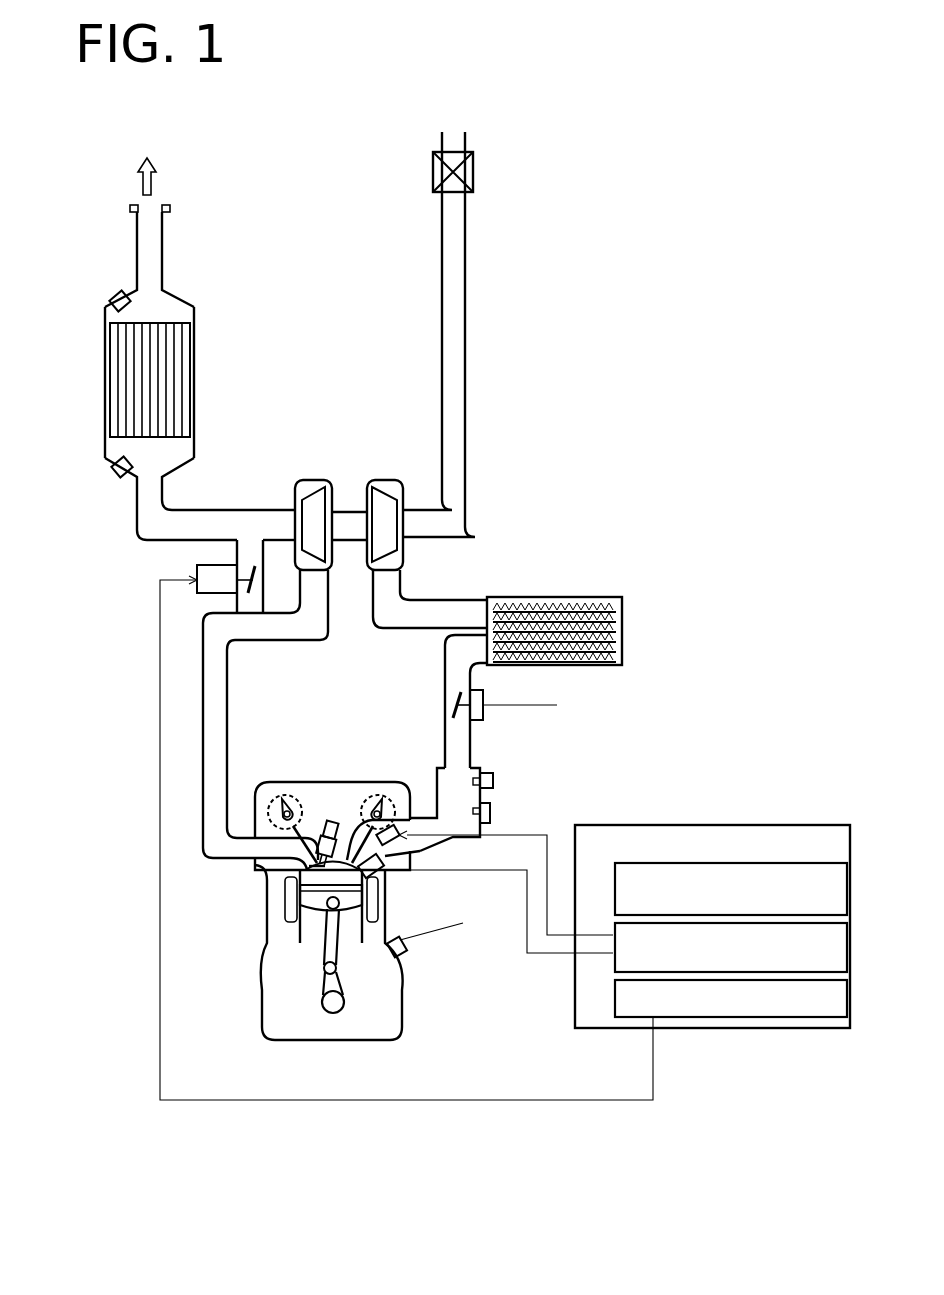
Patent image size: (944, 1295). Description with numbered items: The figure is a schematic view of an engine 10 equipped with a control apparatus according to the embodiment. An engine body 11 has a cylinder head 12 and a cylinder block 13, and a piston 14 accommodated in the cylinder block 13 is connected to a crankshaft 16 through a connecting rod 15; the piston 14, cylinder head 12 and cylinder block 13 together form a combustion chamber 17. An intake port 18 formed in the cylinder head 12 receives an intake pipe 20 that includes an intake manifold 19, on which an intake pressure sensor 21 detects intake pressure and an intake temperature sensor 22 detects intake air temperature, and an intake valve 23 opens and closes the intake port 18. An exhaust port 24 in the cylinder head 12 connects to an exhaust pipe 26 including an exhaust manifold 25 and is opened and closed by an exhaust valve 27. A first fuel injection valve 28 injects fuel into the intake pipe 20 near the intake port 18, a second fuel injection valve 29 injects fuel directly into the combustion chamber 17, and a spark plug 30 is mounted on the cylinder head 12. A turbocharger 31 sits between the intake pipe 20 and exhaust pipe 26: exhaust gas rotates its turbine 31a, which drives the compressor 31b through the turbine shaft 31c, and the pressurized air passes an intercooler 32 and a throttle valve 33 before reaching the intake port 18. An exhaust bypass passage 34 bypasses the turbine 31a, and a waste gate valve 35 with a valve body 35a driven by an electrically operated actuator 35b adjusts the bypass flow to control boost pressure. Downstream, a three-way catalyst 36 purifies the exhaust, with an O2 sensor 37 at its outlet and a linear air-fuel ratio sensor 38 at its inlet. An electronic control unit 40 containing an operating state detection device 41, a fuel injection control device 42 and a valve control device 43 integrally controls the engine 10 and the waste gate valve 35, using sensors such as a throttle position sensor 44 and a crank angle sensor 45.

The engine 10 is at (622, 290).
The engine body 11 is at (353, 722).
The cylinder head 12 is at (263, 782).
The cylinder block 13 is at (280, 968).
The piston 14 is at (310, 903).
The connecting rod 15 is at (328, 953).
The crankshaft 16 is at (323, 1010).
The combustion chamber 17 is at (310, 882).
The intake port 18 is at (348, 827).
The intake manifold 19 is at (460, 790).
The intake pipe 20 is at (453, 437).
The intake pressure sensor 21 is at (492, 818).
The intake temperature sensor 22 is at (494, 780).
The intake valve 23 is at (368, 823).
The exhaust port 24 is at (313, 810).
The exhaust manifold 25 is at (262, 832).
The exhaust pipe 26 is at (217, 520).
The exhaust valve 27 is at (303, 865).
The first fuel injection valve 28 is at (413, 800).
The second fuel injection valve 29 is at (387, 883).
The spark plug 30 is at (328, 820).
The turbocharger 31 is at (352, 460).
The turbine 31a is at (313, 505).
The compressor 31b is at (383, 503).
The turbine shaft 31c is at (350, 522).
The intercooler 32 is at (595, 595).
The throttle valve 33 is at (453, 703).
The exhaust bypass passage 34 is at (250, 553).
The waste gate valve 35 is at (158, 595).
The valve body 35a is at (240, 588).
The electrically operated actuator 35b is at (215, 572).
The three-way catalyst 36 is at (178, 368).
The O2 sensor 37 is at (114, 292).
The linear air-fuel ratio sensor 38 is at (112, 475).
The electronic control unit 40 is at (689, 900).
The operating state detection device 41 is at (687, 862).
The fuel injection control device 42 is at (613, 960).
The valve control device 43 is at (613, 985).
The throttle position sensor 44 is at (487, 700).
The crank angle sensor 45 is at (403, 953).